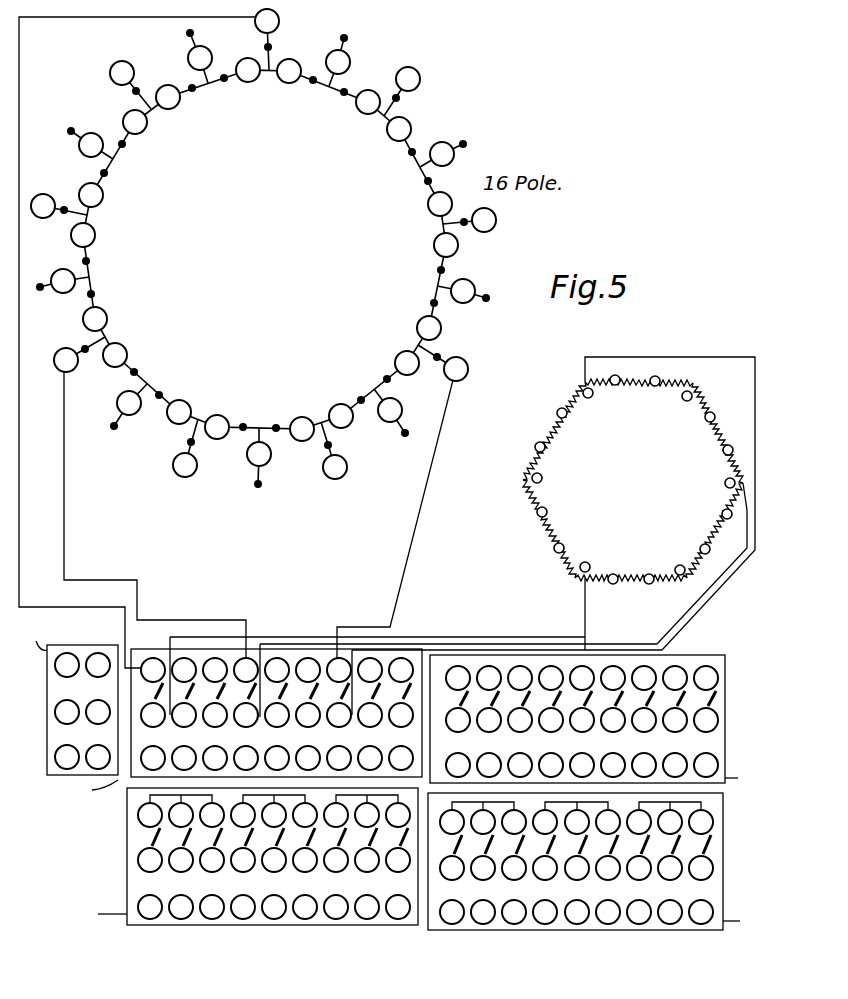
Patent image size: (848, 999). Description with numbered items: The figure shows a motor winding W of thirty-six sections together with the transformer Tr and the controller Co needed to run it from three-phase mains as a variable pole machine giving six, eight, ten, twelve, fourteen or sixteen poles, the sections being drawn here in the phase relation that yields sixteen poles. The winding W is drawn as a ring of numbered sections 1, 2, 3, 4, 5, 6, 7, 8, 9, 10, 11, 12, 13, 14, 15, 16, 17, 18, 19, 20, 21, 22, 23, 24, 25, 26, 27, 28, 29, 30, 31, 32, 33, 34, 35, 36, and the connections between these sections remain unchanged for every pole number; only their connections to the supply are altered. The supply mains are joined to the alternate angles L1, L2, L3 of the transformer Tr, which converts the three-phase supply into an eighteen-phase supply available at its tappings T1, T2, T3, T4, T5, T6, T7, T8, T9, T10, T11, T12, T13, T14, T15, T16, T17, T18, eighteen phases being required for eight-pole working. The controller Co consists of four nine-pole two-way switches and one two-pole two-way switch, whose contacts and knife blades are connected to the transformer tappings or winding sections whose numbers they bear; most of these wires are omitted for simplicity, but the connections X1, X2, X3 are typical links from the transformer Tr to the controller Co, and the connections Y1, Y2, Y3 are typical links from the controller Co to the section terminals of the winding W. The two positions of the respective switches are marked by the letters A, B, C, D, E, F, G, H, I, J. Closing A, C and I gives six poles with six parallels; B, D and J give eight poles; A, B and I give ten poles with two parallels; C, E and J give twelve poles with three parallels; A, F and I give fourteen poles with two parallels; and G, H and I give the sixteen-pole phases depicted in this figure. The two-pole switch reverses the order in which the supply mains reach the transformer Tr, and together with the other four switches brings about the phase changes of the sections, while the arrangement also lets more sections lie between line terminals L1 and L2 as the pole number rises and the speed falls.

The winding W is at (263, 248).
The winding section 1 is at (267, 21).
The winding section 2 is at (289, 71).
The winding section 3 is at (338, 62).
The winding section 4 is at (368, 102).
The winding section 5 is at (408, 79).
The winding section 6 is at (399, 129).
The winding section 7 is at (442, 154).
The winding section 8 is at (440, 204).
The winding section 9 is at (484, 220).
The winding section 10 is at (446, 245).
The winding section 11 is at (463, 291).
The winding section 12 is at (429, 328).
The winding section 13 is at (456, 369).
The winding section 14 is at (407, 363).
The winding section 15 is at (390, 410).
The winding section 16 is at (341, 416).
The winding section 17 is at (335, 467).
The winding section 18 is at (302, 429).
The winding section 19 is at (259, 454).
The winding section 20 is at (217, 427).
The winding section 21 is at (185, 465).
The winding section 22 is at (179, 412).
The winding section 23 is at (129, 403).
The winding section 24 is at (115, 355).
The winding section 25 is at (66, 360).
The winding section 26 is at (95, 319).
The winding section 27 is at (63, 281).
The winding section 28 is at (83, 235).
The winding section 29 is at (43, 206).
The winding section 30 is at (91, 195).
The winding section 31 is at (91, 145).
The winding section 32 is at (135, 122).
The winding section 33 is at (122, 73).
The winding section 34 is at (168, 97).
The winding section 35 is at (200, 58).
The winding section 36 is at (248, 70).
The connection from controller to winding Y1 is at (19, 523).
The connection from controller to winding Y2 is at (408, 566).
The connection from controller to winding Y3 is at (64, 496).
The transformer Tr is at (633, 479).
The line terminal L1 is at (706, 480).
The line terminal L2 is at (608, 429).
The line terminal L3 is at (605, 530).
The transformer tapping T1 is at (596, 400).
The transformer tapping T2 is at (616, 389).
The transformer tapping T3 is at (652, 390).
The transformer tapping T4 is at (679, 403).
The transformer tapping T5 is at (701, 420).
The transformer tapping T6 is at (715, 451).
The transformer tapping T7 is at (717, 484).
The transformer tapping T8 is at (714, 514).
The transformer tapping T9 is at (696, 544).
The transformer tapping T10 is at (673, 563).
The transformer tapping T11 is at (650, 573).
The transformer tapping T12 is at (620, 574).
The transformer tapping T13 is at (596, 562).
The transformer tapping T14 is at (571, 545).
The transformer tapping T15 is at (554, 510).
The transformer tapping T16 is at (551, 479).
The transformer tapping T17 is at (555, 449).
The transformer tapping T18 is at (574, 415).
The connection from transformer to controller X1 is at (755, 386).
The connection from transformer to controller X2 is at (692, 609).
The connection from transformer to controller X3 is at (585, 607).
The switch position A is at (718, 655).
The switch position B is at (157, 650).
The switch position C is at (125, 792).
The switch position D is at (738, 779).
The switch position E is at (723, 808).
The switch position F is at (98, 792).
The switch position G is at (104, 914).
The switch position H is at (738, 922).
The switch position I is at (34, 638).
The switch position J is at (75, 776).
The controller Co is at (68, 835).